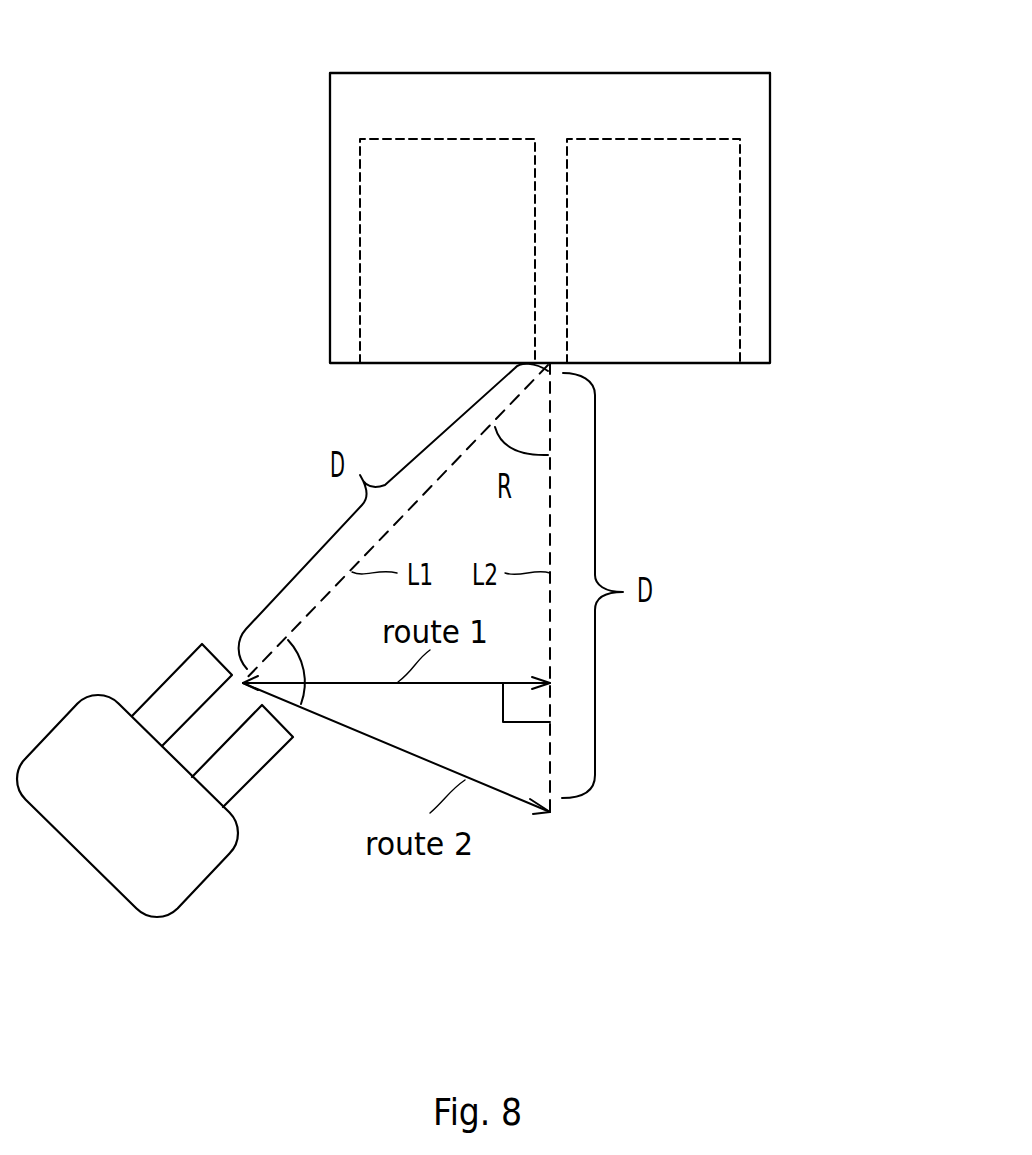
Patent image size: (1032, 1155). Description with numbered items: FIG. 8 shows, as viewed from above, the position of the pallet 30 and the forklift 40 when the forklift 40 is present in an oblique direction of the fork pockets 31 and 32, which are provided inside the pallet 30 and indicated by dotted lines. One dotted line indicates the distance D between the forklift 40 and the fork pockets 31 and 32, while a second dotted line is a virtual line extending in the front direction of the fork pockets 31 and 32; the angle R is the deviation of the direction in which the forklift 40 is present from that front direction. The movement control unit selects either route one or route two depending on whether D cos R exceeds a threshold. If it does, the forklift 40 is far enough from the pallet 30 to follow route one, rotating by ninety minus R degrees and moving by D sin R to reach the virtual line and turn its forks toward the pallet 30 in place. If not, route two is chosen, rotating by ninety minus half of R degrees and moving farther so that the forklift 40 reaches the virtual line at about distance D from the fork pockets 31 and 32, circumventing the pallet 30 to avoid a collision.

The pallet 30 is at (448, 73).
The fork pocket 31 is at (388, 232).
The fork pocket 32 is at (712, 238).
The forklift 40 is at (138, 913).